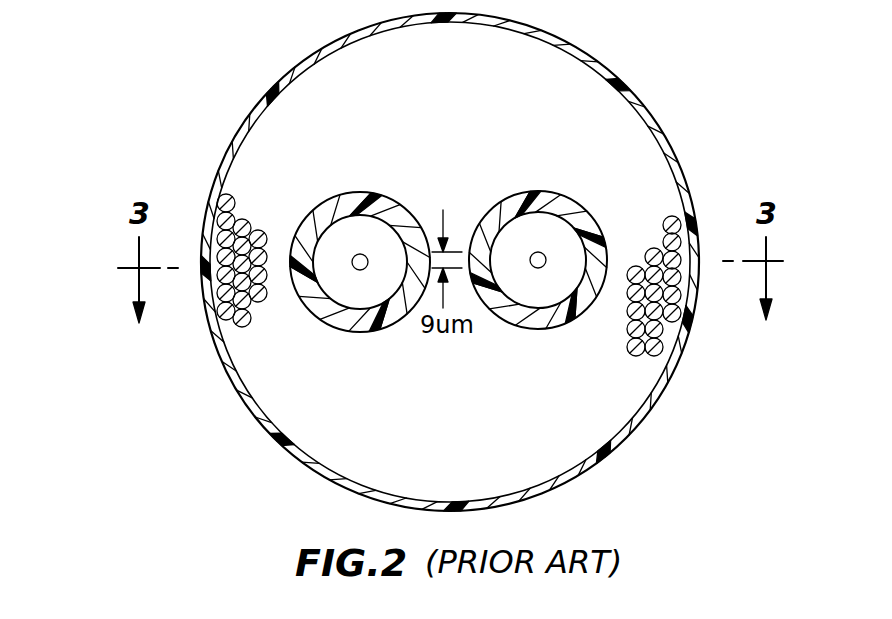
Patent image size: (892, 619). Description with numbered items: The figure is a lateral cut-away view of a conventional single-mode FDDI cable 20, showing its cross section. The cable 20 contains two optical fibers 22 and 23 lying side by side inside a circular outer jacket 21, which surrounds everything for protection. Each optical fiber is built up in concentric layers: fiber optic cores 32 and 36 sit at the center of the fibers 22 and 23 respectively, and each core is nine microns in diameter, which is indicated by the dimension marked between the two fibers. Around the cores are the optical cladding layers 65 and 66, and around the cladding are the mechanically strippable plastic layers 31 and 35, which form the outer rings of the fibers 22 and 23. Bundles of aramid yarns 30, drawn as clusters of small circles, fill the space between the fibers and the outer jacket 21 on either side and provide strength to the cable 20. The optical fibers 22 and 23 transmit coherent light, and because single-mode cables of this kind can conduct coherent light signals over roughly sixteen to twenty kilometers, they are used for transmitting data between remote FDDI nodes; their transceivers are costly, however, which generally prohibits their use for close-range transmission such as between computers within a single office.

The single-mode cable 20 is at (457, 262).
The outer jacket 21 is at (240, 130).
The optical fiber 22 is at (545, 258).
The optical fiber 23 is at (364, 261).
The aramid yarns 30 is at (254, 288).
The mechanically strippable plastic layer 31 is at (515, 318).
The fiber optic core 32 is at (531, 252).
The mechanically strippable plastic layer 35 is at (347, 322).
The fiber optic core 36 is at (358, 254).
The optical cladding layer 65 is at (388, 238).
The optical cladding layer 66 is at (544, 292).